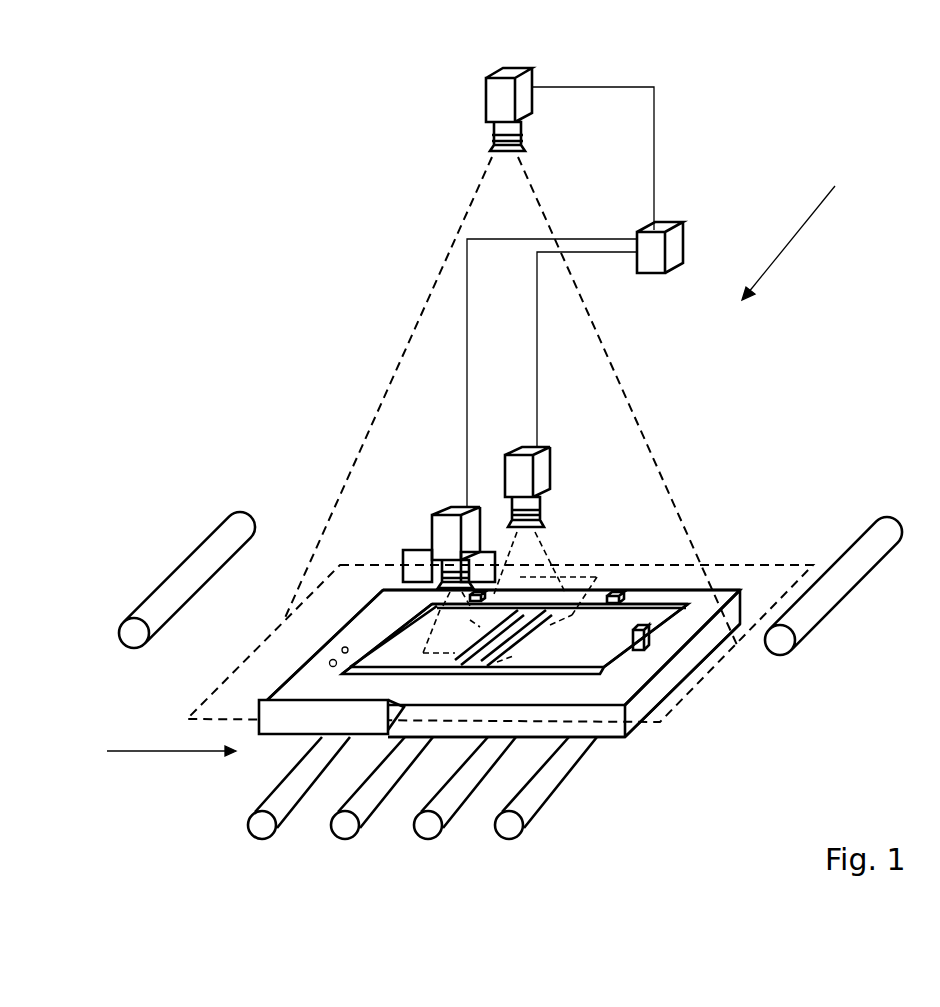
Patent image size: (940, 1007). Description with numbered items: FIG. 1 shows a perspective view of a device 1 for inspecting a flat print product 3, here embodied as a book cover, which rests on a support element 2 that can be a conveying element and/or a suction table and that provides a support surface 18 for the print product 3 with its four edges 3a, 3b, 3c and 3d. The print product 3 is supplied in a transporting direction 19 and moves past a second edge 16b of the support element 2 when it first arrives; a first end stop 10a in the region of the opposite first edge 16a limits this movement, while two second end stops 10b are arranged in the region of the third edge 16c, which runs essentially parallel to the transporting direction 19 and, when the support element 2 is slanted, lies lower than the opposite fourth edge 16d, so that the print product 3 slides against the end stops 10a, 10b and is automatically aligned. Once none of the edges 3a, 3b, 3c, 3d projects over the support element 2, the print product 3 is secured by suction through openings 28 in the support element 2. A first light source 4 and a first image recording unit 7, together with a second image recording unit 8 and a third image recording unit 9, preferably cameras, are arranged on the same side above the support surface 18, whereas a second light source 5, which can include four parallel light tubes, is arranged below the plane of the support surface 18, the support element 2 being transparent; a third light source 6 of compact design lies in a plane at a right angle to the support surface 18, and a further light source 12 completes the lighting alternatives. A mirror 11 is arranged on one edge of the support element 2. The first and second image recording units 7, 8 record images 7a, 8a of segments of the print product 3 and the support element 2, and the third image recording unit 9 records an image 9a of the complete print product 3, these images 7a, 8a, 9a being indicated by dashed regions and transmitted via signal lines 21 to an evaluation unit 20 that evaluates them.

The device 1 is at (795, 230).
The support element 2 is at (608, 695).
The flat print product 3 is at (576, 649).
The edge 3a is at (625, 657).
The edge 3b is at (389, 618).
The edge 3c is at (643, 603).
The edge 3d is at (523, 677).
The first light source 4 is at (213, 555).
The second light source 5 is at (493, 833).
The third light source 6 is at (423, 557).
The first image recording unit 7 is at (460, 513).
The image 7a is at (487, 677).
The second image recording unit 8 is at (522, 453).
The image 8a is at (577, 575).
The third image recording unit 9 is at (527, 105).
The image 9a is at (794, 568).
The first end stop 10a is at (652, 645).
The second end stop 10b is at (615, 590).
The mirror 11 is at (328, 722).
The light source 12 is at (873, 542).
The first edge 16a is at (628, 655).
The second edge 16b is at (292, 672).
The third edge 16c is at (678, 590).
The fourth edge 16d is at (625, 738).
The support surface 18 is at (383, 612).
The transporting direction 19 is at (171, 739).
The evaluation unit 20 is at (675, 250).
The signal lines 21 is at (654, 175).
The openings 28 is at (330, 660).